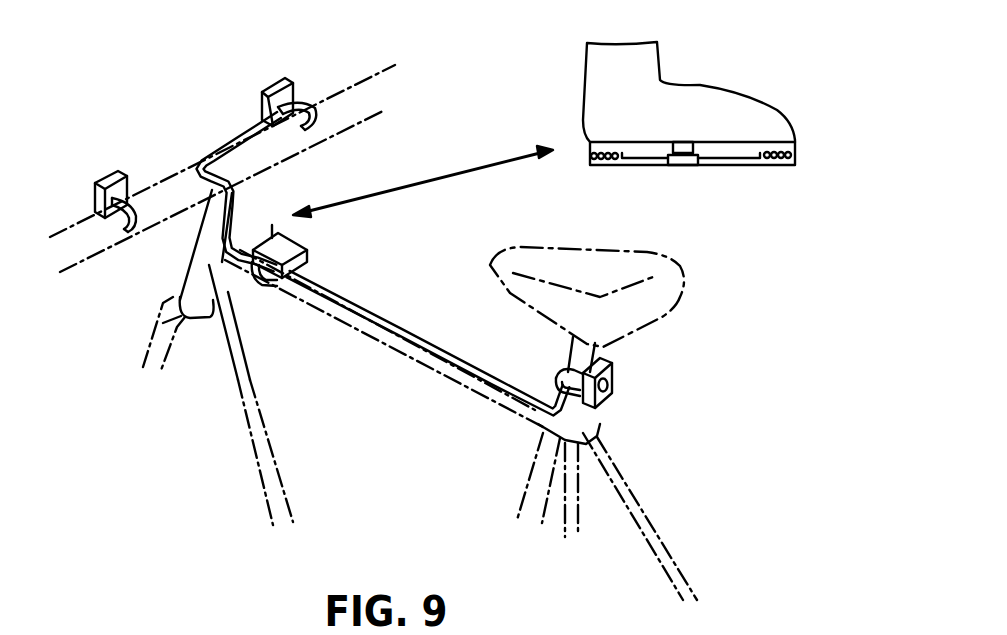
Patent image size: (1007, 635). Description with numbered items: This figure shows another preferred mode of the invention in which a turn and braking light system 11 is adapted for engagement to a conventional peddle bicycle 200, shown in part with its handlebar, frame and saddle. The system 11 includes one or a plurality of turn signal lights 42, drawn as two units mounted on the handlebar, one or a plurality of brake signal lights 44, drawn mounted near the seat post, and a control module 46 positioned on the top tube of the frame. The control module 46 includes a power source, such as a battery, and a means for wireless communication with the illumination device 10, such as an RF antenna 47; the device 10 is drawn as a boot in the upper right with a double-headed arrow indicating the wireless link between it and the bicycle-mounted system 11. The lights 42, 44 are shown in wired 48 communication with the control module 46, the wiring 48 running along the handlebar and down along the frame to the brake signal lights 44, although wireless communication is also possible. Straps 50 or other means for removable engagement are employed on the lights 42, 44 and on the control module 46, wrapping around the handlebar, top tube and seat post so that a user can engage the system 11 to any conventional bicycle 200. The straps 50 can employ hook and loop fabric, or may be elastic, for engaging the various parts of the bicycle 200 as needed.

The illumination device 10 is at (783, 219).
The turn and braking light system 11 is at (123, 119).
The turn signal lights 42 is at (95, 185).
The brake signal lights 44 is at (613, 374).
The control module 46 is at (307, 252).
The RF antenna 47 is at (272, 228).
The wired communication 48 is at (230, 148).
The straps 50 is at (131, 232).
The peddle bicycle 200 is at (250, 448).